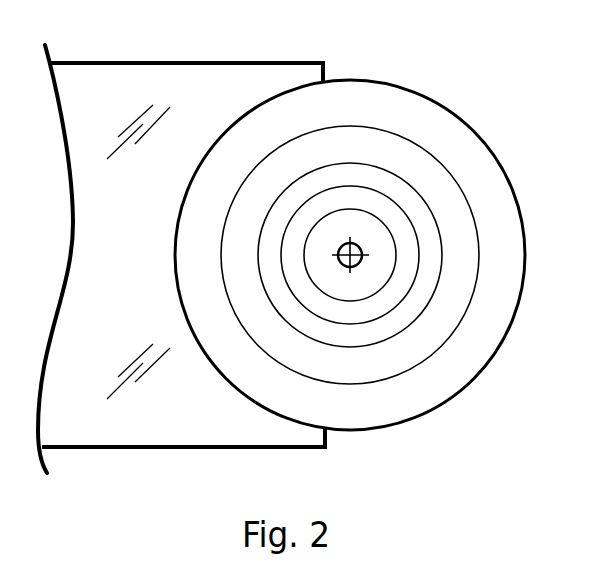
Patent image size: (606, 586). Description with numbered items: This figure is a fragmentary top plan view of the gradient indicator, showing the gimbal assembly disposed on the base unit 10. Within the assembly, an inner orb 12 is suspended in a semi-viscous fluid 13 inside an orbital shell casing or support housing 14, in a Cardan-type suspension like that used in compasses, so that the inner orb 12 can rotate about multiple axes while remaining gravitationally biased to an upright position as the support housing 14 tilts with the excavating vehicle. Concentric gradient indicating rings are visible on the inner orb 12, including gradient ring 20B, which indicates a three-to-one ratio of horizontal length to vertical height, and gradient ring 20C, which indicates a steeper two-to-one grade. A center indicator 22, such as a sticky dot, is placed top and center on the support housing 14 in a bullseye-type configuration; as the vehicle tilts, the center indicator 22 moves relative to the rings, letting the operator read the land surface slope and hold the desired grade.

The base unit 10 is at (195, 80).
The inner orb 12 is at (445, 158).
The semi-viscous fluid 13 is at (362, 116).
The support housing 14 is at (436, 94).
The gradient indicating ring 20B is at (417, 241).
The gradient indicating ring 20C is at (428, 205).
The center indicator 22 is at (360, 263).